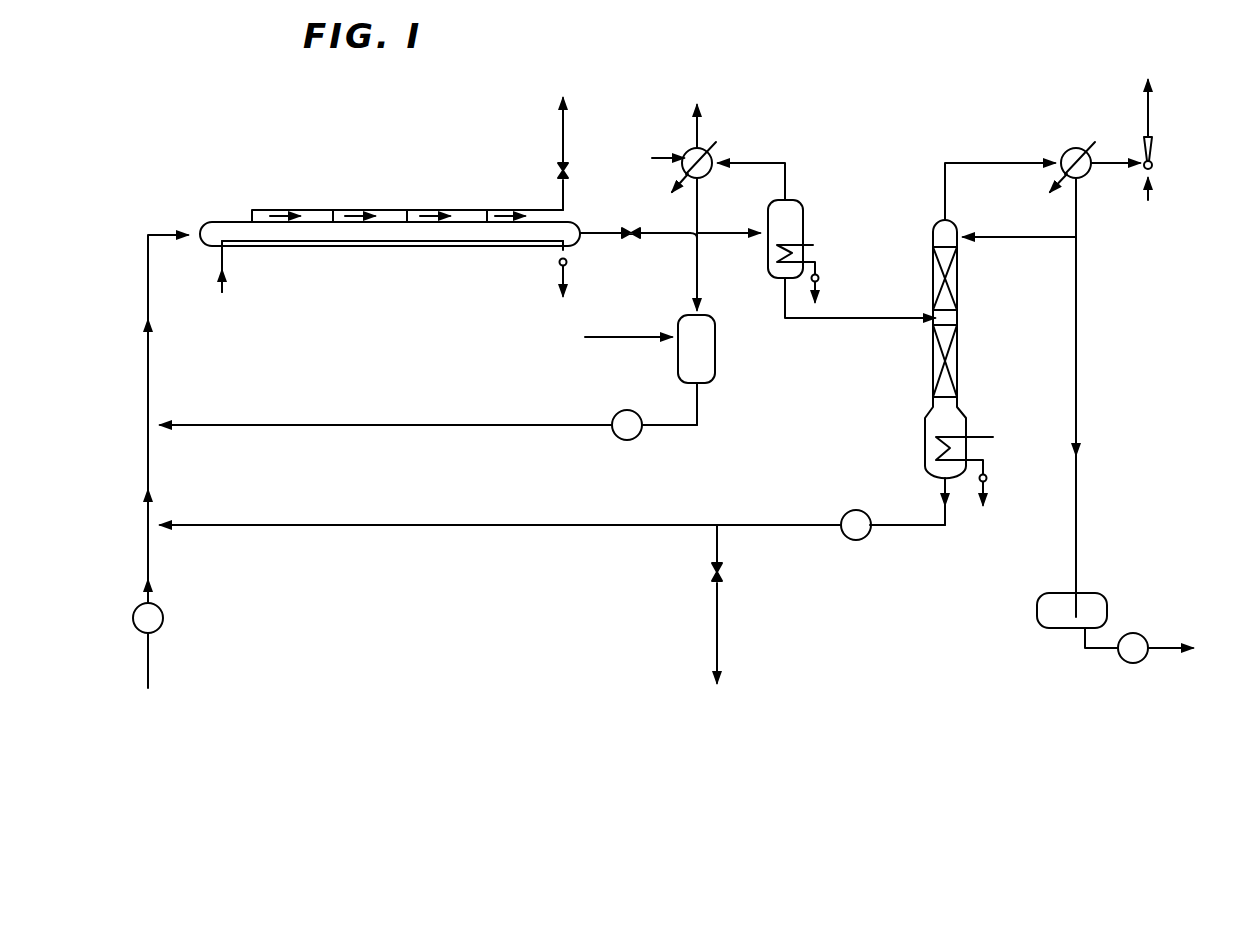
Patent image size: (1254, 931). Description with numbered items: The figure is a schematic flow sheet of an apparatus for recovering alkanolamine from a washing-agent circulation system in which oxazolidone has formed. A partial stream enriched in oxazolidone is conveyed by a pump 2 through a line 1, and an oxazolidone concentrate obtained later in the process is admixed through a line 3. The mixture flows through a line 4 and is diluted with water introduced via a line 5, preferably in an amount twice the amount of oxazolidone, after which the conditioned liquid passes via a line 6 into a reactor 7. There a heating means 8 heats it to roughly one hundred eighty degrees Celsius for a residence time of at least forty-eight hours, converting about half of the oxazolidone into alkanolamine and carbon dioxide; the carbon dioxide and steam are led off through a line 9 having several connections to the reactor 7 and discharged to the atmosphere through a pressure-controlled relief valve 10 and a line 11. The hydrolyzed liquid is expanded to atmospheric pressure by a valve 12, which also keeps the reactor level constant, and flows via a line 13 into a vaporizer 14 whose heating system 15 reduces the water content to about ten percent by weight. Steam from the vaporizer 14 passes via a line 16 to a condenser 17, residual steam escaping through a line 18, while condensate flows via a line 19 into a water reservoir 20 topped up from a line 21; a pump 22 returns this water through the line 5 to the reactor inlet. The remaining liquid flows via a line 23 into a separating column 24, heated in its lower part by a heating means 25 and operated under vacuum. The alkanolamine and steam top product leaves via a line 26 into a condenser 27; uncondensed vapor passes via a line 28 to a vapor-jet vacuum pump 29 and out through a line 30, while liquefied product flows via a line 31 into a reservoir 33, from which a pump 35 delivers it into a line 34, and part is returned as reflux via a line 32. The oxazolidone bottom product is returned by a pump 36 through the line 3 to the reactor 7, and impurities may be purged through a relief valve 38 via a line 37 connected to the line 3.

The line 1 is at (150, 592).
The pump 2 is at (161, 626).
The line 3 is at (355, 525).
The line 4 is at (148, 460).
The line 5 is at (358, 425).
The line 6 is at (150, 370).
The reactor 7 is at (352, 238).
The heating means 8 is at (222, 284).
The line 9 is at (400, 210).
The pressure-controlled relief valve 10 is at (556, 170).
The line 11 is at (563, 129).
The valve 12 is at (629, 226).
The line 13 is at (595, 233).
The vaporizer 14 is at (805, 200).
The heating system 15 is at (808, 250).
The line 16 is at (752, 163).
The condenser 17 is at (653, 167).
The line 18 is at (690, 128).
The line 19 is at (697, 207).
The water reservoir 20 is at (722, 350).
The line 21 is at (640, 337).
The pump 22 is at (617, 412).
The line 23 is at (878, 318).
The separating column 24 is at (963, 320).
The heating means 25 is at (935, 446).
The line 26 is at (962, 163).
The condenser 27 is at (1062, 150).
The line 28 is at (1103, 163).
The vapor-jet vacuum pump 29 is at (1153, 165).
The line 30 is at (1150, 113).
The line 31 is at (1078, 306).
The line 32 is at (990, 237).
The reservoir 33 is at (1032, 595).
The line 34 is at (1160, 648).
The pump 35 is at (1138, 633).
The pump 36 is at (845, 513).
The line 37 is at (718, 622).
The relief valve 38 is at (710, 571).